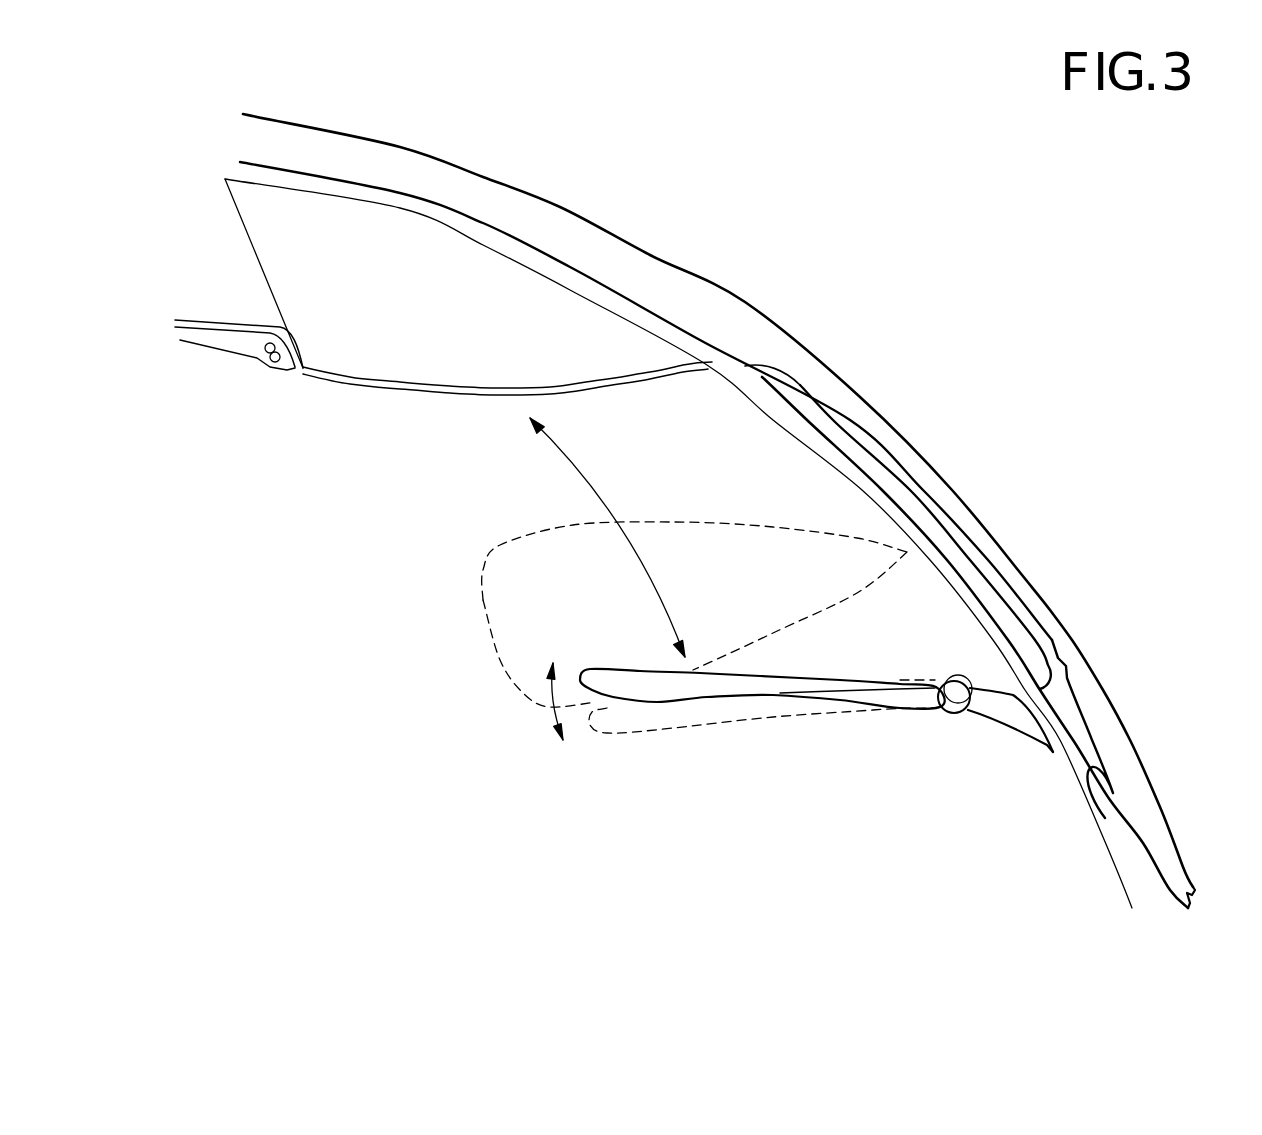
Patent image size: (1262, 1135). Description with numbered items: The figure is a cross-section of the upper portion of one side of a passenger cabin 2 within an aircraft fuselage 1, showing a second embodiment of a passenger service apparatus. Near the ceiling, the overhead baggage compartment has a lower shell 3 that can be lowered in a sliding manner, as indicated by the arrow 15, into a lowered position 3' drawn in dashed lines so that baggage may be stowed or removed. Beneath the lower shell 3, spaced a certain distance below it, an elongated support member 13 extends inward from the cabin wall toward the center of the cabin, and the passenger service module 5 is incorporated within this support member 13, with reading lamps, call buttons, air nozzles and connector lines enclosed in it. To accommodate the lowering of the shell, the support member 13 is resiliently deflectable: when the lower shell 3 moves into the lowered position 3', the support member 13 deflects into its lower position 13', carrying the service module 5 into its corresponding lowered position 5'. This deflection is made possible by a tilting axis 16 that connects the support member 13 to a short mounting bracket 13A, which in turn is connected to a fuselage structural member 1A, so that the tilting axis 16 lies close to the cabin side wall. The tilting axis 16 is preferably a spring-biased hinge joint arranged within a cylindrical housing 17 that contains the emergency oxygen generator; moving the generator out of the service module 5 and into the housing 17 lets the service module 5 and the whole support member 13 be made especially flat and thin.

The aircraft fuselage 1 is at (745, 295).
The fuselage structural member 1A is at (1077, 730).
The passenger cabin 2 is at (368, 463).
The lower shell 3 is at (706, 543).
The lowered position of lower shell 3' is at (656, 614).
The passenger service module 5 is at (525, 677).
The lowered position of passenger service module 5' is at (731, 754).
The support member 13 is at (762, 743).
The lower position of support member 13' is at (715, 767).
The mounting bracket 13A is at (993, 703).
The arrow 15 is at (587, 485).
The tilting axis 16 is at (952, 693).
The cylindrical housing 17 is at (950, 717).